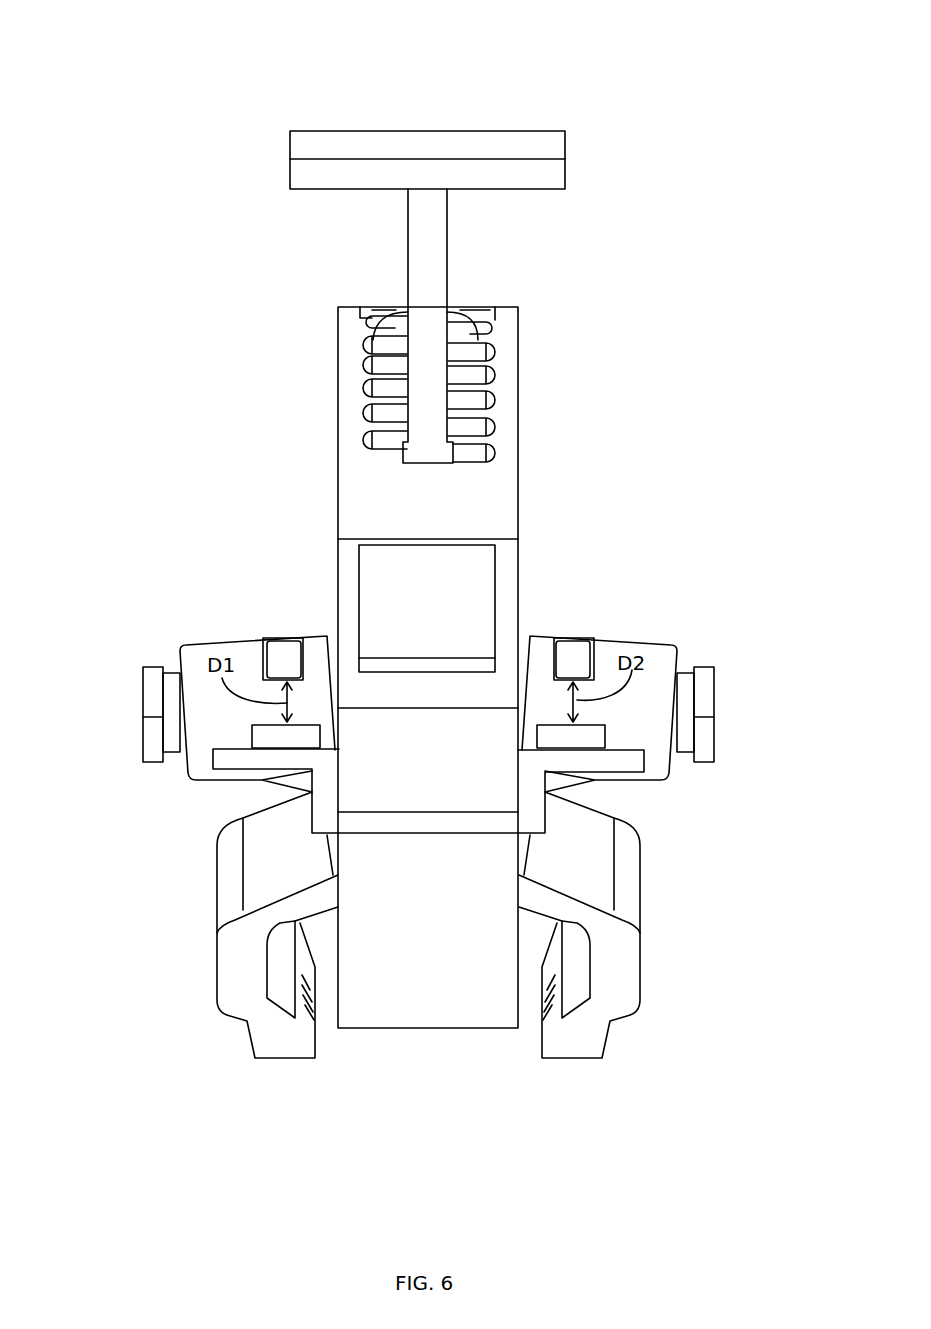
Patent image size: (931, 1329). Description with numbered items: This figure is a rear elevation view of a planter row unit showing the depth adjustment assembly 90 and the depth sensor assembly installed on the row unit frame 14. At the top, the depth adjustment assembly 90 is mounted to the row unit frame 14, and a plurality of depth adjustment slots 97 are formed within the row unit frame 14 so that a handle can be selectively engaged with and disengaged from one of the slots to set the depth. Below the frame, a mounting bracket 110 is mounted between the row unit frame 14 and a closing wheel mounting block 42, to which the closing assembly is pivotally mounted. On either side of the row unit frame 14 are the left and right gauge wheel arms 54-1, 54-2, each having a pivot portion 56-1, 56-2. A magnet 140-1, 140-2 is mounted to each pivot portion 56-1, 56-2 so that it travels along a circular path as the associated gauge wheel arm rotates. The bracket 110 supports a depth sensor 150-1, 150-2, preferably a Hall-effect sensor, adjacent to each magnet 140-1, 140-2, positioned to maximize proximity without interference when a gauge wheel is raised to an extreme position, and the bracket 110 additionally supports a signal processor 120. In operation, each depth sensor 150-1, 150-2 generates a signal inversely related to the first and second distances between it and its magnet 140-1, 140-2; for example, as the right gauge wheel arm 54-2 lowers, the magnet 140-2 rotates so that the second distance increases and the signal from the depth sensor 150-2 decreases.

The depth adjustment assembly 90 is at (408, 122).
The row unit frame 14 is at (518, 401).
The depth adjustment slots 97 is at (387, 388).
The closing wheel mounting block 42 is at (386, 1030).
The signal processor 120 is at (465, 592).
The mounting bracket 110 is at (630, 777).
The pivot portion of left gauge wheel arm 56-1 is at (202, 640).
The pivot portion of right gauge wheel arm 56-2 is at (667, 640).
The left magnet 140-1 is at (283, 657).
The right magnet 140-2 is at (578, 657).
The left depth sensor 150-1 is at (270, 740).
The right depth sensor 150-2 is at (610, 740).
The left gauge wheel arm 54-1 is at (218, 938).
The right gauge wheel arm 54-2 is at (638, 893).